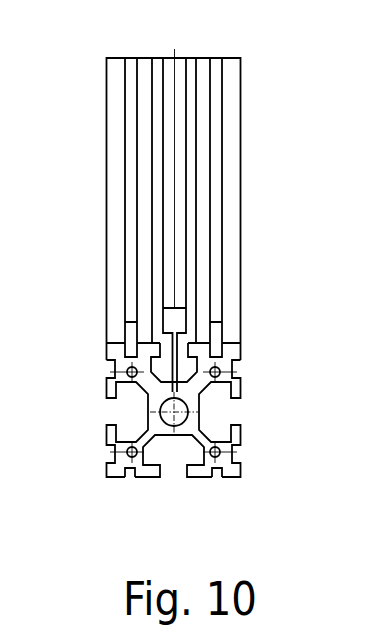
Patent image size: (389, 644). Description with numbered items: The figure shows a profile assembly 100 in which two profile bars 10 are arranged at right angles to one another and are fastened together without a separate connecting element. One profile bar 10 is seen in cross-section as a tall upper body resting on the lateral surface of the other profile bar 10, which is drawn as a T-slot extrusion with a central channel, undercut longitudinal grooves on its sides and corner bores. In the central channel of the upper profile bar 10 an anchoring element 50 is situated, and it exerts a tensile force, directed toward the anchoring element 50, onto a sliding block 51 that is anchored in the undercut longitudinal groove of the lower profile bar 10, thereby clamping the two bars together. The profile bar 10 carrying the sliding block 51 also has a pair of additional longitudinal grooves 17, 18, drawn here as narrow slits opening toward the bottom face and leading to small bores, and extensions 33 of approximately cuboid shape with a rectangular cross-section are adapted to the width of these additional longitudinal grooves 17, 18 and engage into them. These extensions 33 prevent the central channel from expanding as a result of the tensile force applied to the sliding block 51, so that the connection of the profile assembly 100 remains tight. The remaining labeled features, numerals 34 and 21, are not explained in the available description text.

The profile assembly 100 is at (164, 301).
The profile bar 10 is at (247, 146).
The anchoring element 50 is at (177, 322).
The sliding block 51 is at (150, 377).
The groove 34 is at (125, 328).
The extension 33 is at (220, 373).
The additional longitudinal groove 17 is at (132, 464).
The additional longitudinal groove 18 is at (213, 465).
The bore 21 is at (220, 455).